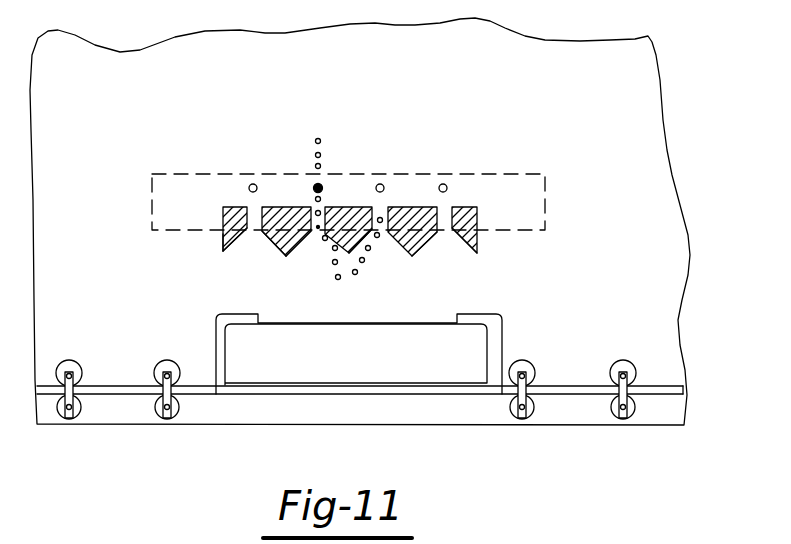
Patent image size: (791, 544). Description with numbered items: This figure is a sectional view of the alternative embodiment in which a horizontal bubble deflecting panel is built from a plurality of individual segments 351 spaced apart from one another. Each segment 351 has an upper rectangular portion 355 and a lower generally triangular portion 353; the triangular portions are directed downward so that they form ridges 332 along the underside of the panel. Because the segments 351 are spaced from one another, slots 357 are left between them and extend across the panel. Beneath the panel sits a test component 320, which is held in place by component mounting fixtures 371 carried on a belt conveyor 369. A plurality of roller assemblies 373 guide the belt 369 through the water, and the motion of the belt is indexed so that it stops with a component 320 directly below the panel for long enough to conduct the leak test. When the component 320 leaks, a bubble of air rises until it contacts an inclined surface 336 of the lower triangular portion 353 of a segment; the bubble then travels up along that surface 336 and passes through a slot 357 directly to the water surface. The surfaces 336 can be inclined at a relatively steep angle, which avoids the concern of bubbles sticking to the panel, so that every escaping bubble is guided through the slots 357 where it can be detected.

The test component 320 is at (472, 351).
The ridges 332 is at (226, 249).
The inclined surface 336 is at (245, 239).
The segments 351 is at (230, 207).
The lower generally triangular portion 353 is at (235, 239).
The upper rectangular portion 355 is at (277, 207).
The slots 357 is at (367, 180).
The belt conveyor 369 is at (657, 384).
The component mounting fixtures 371 is at (216, 378).
The roller assemblies 373 is at (77, 402).